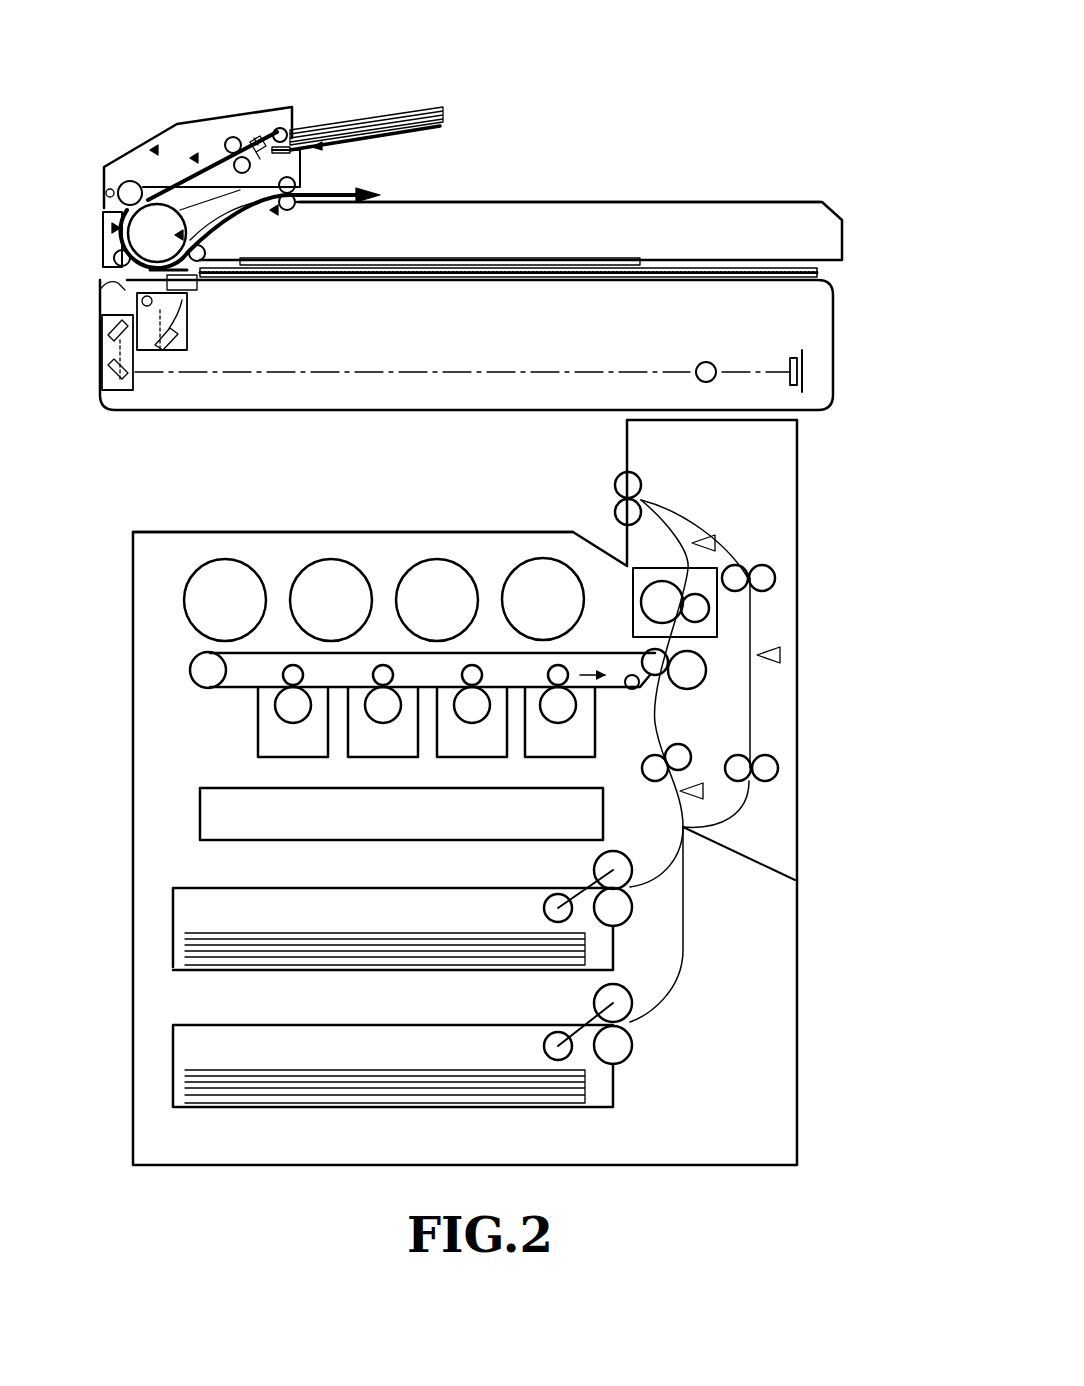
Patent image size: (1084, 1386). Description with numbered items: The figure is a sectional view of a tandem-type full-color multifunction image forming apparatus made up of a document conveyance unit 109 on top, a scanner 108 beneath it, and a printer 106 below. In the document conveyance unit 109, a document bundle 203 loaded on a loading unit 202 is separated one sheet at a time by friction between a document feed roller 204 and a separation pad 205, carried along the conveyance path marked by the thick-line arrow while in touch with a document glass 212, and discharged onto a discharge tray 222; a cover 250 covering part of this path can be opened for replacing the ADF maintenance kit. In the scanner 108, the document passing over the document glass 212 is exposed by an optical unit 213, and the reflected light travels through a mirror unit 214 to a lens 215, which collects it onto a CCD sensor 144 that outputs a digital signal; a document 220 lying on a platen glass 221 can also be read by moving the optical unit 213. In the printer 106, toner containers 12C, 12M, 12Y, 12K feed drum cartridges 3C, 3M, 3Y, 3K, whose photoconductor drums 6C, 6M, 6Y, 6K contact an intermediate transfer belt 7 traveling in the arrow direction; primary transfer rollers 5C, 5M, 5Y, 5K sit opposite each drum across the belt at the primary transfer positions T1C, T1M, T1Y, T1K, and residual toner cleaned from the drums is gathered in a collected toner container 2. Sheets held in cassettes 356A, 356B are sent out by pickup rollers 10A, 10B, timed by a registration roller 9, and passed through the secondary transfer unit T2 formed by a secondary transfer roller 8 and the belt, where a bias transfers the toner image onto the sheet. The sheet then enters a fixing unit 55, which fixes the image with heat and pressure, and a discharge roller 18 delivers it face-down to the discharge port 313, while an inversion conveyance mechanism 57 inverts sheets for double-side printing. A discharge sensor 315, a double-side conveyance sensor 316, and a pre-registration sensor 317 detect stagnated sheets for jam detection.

The collected toner container 2 is at (198, 808).
The drum cartridge 3C is at (290, 762).
The drum cartridge 3M is at (400, 762).
The drum cartridge 3Y is at (458, 762).
The drum cartridge 3K is at (580, 762).
The primary transfer roller 5C is at (285, 674).
The primary transfer roller 5M is at (374, 674).
The primary transfer roller 5Y is at (463, 674).
The primary transfer roller 5K is at (549, 674).
The photoconductor drum 6C is at (293, 705).
The photoconductor drum 6M is at (383, 705).
The photoconductor drum 6Y is at (472, 705).
The photoconductor drum 6K is at (558, 705).
The intermediate transfer belt 7 is at (218, 690).
The secondary transfer roller 8 is at (706, 668).
The registration roller 9 is at (688, 740).
The pickup roller 10A is at (556, 892).
The pickup roller 10B is at (556, 1026).
The toner container 12C is at (225, 600).
The toner container 12M is at (331, 600).
The toner container 12Y is at (437, 600).
The toner container 12K is at (543, 599).
The discharge roller 18 is at (640, 474).
The fixing unit 55 is at (712, 610).
The inversion conveyance mechanism 57 is at (753, 636).
The printer 106 is at (795, 1072).
The scanner 108 is at (865, 316).
The document conveyance unit 109 is at (865, 211).
The CCD sensor 144 is at (793, 357).
The loading unit 202 is at (445, 124).
The document bundle 203 is at (400, 108).
The document feed roller 204 is at (280, 127).
The separation pad 205 is at (285, 154).
The document glass 212 is at (122, 284).
The optical unit 213 is at (190, 327).
The mirror unit 214 is at (106, 384).
The lens 215 is at (705, 361).
The document 220 is at (620, 259).
The platen glass 221 is at (731, 268).
The discharge tray 222 is at (556, 201).
The cover 250 is at (160, 135).
The discharge port 313 is at (506, 512).
The discharge sensor 315 is at (710, 536).
The double-side conveyance sensor 316 is at (785, 652).
The pre-registration sensor 317 is at (700, 788).
The cassette 356A is at (393, 968).
The cassette 356B is at (393, 1101).
The primary transfer portion (cyan) T1C is at (268, 692).
The primary transfer portion (magenta) T1M is at (358, 692).
The primary transfer portion (yellow) T1Y is at (447, 692).
The primary transfer portion (black) T1K is at (534, 692).
The secondary transfer unit T2 is at (672, 688).